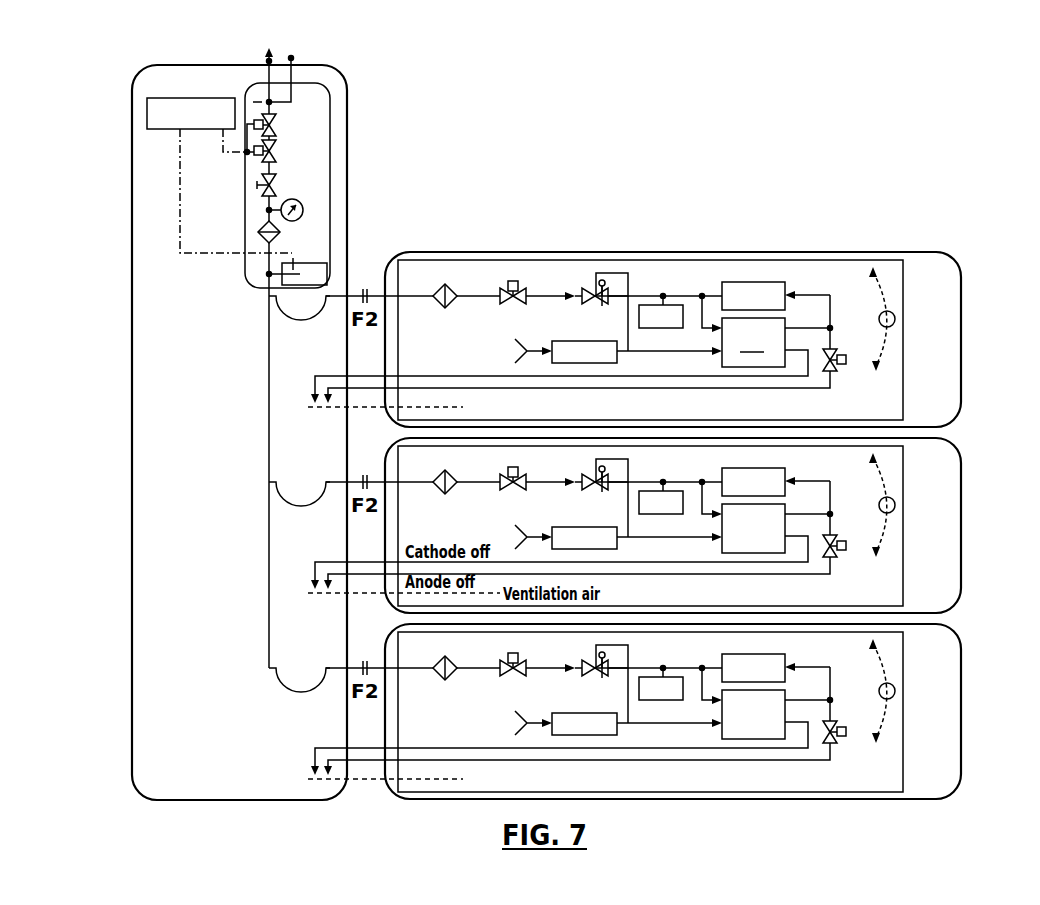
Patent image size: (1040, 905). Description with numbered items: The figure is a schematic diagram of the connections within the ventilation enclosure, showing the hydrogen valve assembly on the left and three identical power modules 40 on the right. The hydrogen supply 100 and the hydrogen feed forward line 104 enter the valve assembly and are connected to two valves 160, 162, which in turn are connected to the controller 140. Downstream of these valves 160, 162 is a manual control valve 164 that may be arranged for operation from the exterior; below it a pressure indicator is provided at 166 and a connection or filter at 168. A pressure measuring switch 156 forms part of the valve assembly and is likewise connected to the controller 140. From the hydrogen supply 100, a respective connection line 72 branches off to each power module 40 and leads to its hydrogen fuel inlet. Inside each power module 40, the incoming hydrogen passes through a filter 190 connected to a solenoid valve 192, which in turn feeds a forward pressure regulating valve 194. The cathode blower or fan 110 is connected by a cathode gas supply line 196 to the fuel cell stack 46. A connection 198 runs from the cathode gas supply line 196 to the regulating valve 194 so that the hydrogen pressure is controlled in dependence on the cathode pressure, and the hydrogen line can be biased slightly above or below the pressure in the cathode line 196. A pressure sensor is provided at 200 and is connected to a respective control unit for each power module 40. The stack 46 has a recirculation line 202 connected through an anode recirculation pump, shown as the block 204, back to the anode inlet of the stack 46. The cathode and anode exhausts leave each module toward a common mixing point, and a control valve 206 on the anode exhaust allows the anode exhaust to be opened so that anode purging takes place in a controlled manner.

The power module 40 is at (729, 252).
The fuel cell stack 46 is at (753, 342).
The connection line 72 is at (275, 296).
The hydrogen supply 100 is at (273, 77).
The hydrogen feed forward line 104 is at (297, 82).
The cathode blower or fan 110 is at (593, 379).
The controller 140 is at (148, 110).
The pressure measuring switch 156 is at (324, 264).
The valve 160 is at (277, 125).
The valve 162 is at (277, 152).
The manual control valve 164 is at (277, 182).
The pressure indicator 166 is at (303, 212).
The connection or filter 168 is at (281, 232).
The filter 190 is at (472, 323).
The solenoid valve 192 is at (532, 254).
The forward pressure regulating valve 194 is at (610, 255).
The cathode gas supply line 196 is at (676, 382).
The connection 198 is at (663, 266).
The pressure sensor 200 is at (680, 270).
The recirculation line 202 is at (586, 303).
The humidifier 204 is at (760, 253).
The control valve 206 is at (923, 361).